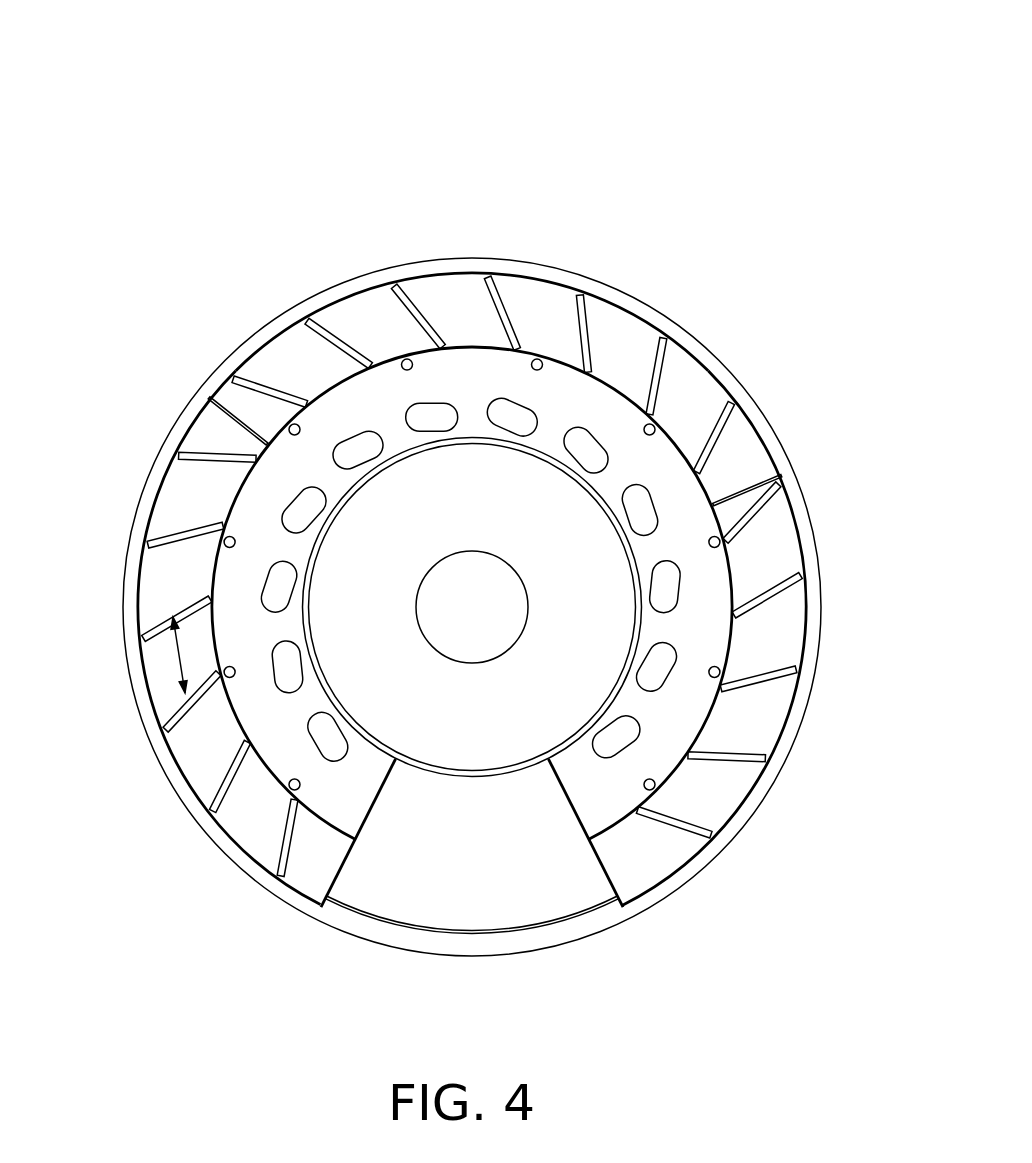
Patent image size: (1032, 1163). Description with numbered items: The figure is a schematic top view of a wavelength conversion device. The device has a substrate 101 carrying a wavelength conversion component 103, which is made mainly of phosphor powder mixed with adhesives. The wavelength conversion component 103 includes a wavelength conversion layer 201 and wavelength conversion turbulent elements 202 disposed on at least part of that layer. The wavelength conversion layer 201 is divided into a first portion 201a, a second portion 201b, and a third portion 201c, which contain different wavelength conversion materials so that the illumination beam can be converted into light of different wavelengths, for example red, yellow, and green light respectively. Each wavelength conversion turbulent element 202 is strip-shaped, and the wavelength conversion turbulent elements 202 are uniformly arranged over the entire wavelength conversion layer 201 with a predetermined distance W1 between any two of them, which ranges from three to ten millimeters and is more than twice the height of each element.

The substrate 101 is at (595, 927).
The wavelength conversion component 103 is at (95, 40).
The wavelength conversion layer 201 is at (150, 3).
The first portion 201a is at (150, 580).
The second portion 201b is at (592, 253).
The third portion 201c is at (793, 625).
The wavelength conversion turbulent elements 202 is at (850, 486).
The distance W1 is at (168, 655).